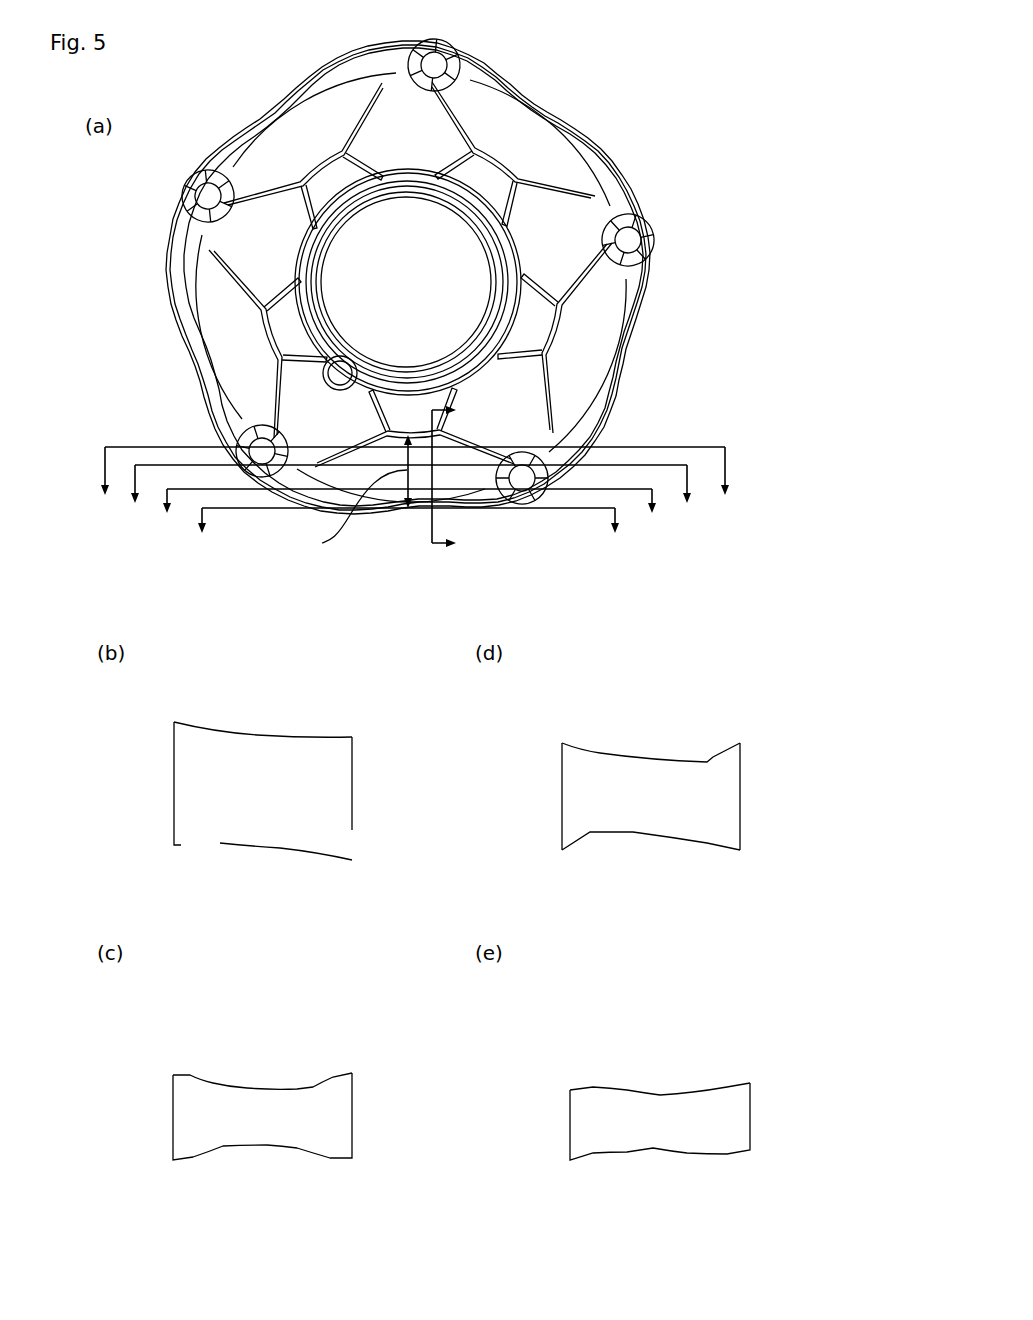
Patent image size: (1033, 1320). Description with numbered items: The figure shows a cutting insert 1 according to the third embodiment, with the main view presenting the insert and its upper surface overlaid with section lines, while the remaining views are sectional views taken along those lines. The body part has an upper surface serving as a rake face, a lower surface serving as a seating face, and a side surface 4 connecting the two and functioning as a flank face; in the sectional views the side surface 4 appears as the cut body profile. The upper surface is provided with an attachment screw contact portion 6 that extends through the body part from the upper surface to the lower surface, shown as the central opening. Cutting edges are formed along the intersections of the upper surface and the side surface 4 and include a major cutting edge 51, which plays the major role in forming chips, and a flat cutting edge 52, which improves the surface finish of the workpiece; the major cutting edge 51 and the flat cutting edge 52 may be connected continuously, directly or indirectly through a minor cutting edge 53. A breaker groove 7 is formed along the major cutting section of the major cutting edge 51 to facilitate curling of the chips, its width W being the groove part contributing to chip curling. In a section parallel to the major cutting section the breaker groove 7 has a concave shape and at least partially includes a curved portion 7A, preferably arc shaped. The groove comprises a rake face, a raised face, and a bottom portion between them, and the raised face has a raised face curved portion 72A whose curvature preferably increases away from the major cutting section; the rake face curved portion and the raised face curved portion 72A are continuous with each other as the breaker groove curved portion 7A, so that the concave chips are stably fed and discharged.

The vehicle wheel 1 is at (578, 99).
The side surface 4 is at (353, 783).
The attachment screw contact portion 6 is at (433, 277).
The breaker groove 7 is at (592, 288).
The breaker groove curved portion 7A is at (467, 882).
The raised face curved portion 72A is at (642, 758).
The major cutting edge 51 is at (633, 322).
The flat cutting edge 52 is at (580, 460).
The minor cutting edge 53 is at (573, 463).